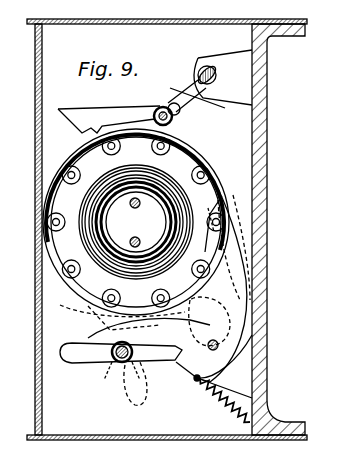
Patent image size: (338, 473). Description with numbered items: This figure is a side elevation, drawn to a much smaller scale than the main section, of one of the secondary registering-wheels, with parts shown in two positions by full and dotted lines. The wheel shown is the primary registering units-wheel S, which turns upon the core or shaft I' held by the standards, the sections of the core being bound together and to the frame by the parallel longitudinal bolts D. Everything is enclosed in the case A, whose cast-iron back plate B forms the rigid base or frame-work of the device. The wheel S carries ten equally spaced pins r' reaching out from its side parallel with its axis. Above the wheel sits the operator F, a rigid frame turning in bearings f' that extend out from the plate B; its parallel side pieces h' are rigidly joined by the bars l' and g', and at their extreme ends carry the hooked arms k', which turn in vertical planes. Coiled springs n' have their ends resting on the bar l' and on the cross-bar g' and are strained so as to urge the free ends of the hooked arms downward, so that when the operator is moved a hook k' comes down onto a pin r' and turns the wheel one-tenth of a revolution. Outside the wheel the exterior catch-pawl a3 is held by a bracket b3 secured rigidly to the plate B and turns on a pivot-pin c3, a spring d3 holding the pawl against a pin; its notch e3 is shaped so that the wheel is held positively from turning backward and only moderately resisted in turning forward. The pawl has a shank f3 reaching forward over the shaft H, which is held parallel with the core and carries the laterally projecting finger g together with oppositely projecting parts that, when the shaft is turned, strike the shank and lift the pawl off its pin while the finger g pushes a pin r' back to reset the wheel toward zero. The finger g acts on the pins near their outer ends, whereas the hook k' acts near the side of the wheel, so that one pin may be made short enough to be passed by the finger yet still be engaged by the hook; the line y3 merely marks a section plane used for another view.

The case A is at (167, 244).
The back plate B is at (278, 229).
The primary registering units-wheel S is at (136, 222).
The pins r' is at (136, 222).
The core I' is at (136, 222).
The longitudinal bolts D is at (138, 209).
The operator F is at (109, 108).
The hooked arms k' is at (111, 119).
The coiled springs n' is at (176, 121).
The bar l' is at (187, 93).
The bearings f' is at (223, 77).
The cross-bar g' is at (199, 64).
The side pieces h' is at (197, 106).
The catch-pawl a3 is at (219, 281).
The notch e3 is at (212, 232).
The pivot-pin c3 is at (208, 352).
The bracket b3 is at (230, 374).
The spring d3 is at (221, 403).
The shank f3 is at (92, 338).
The finger g is at (120, 360).
The shaft H is at (112, 368).
The dotted line y3 is at (131, 383).